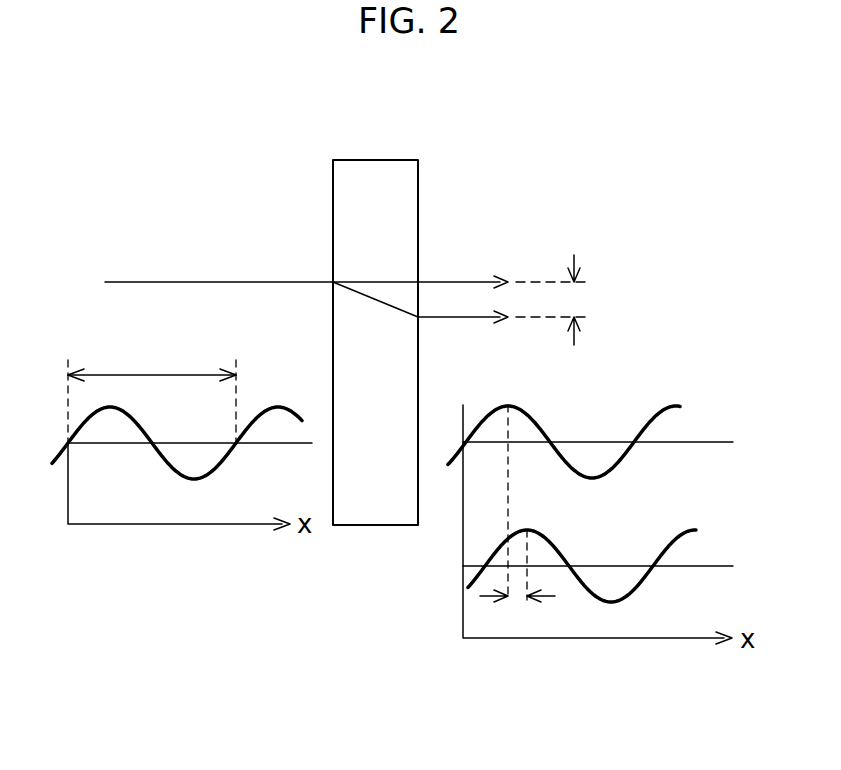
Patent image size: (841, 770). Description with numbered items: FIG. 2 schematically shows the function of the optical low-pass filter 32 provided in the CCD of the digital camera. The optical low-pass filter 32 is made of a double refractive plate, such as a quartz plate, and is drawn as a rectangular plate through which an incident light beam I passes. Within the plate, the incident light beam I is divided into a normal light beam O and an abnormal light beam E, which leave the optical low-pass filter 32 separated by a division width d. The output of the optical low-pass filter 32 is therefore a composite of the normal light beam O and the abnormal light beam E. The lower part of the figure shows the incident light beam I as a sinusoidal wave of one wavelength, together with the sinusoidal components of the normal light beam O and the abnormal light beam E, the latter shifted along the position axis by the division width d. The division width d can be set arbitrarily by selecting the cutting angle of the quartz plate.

The optical low-pass filter 32 is at (376, 160).
The incident light beam I is at (184, 281).
The normal light beam O is at (460, 281).
The abnormal light beam E is at (460, 318).
The division width d is at (545, 443).